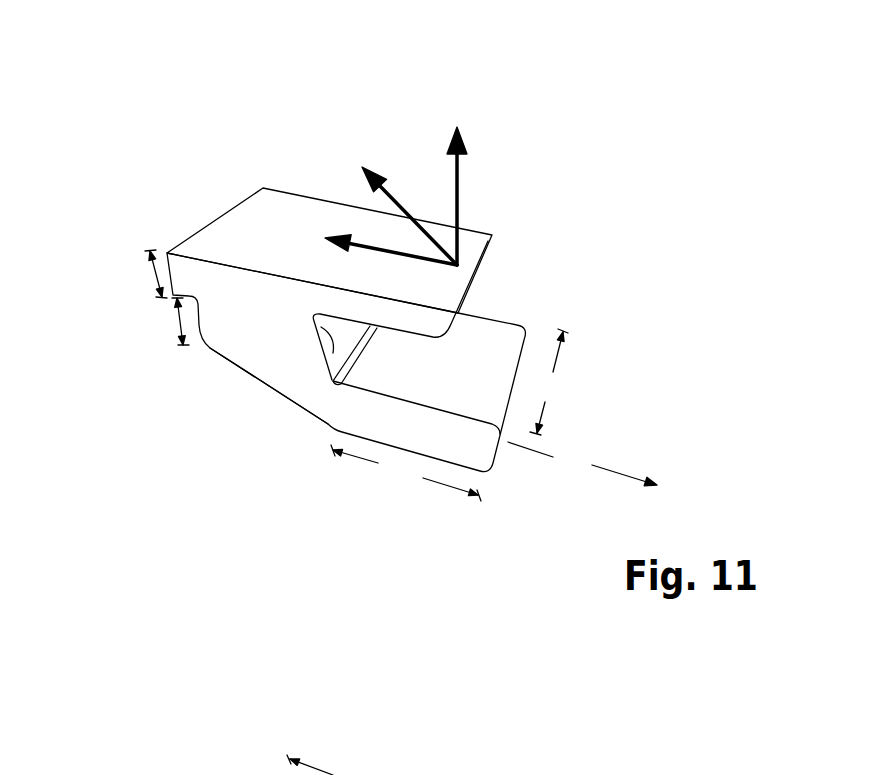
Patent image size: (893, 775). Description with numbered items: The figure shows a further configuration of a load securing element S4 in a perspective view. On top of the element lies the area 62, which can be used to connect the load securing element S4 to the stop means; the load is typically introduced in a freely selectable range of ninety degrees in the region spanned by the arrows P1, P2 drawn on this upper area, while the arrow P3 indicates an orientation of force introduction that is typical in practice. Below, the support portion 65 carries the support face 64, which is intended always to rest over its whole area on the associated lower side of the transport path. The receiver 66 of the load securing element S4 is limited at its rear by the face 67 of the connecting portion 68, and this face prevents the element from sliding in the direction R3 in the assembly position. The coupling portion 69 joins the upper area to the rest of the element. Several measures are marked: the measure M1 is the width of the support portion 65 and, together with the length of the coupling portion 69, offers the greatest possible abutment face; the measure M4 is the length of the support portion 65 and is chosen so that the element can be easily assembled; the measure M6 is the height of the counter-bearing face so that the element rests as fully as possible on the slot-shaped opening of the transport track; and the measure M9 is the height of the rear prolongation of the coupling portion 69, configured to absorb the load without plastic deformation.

The load securing element S4 is at (292, 183).
The area 62 is at (230, 242).
The support face 64 is at (487, 358).
The support portion 65 is at (472, 453).
The receiver 66 is at (378, 353).
The face 67 is at (333, 380).
The connecting portion 68 is at (297, 392).
The coupling portion 69 is at (405, 317).
The measure M9 is at (155, 285).
The measure M6 is at (178, 329).
The measure M4 is at (406, 473).
The measure M1 is at (538, 393).
The direction R3 is at (607, 468).
The arrow P1 is at (378, 250).
The arrow P2 is at (472, 196).
The arrow P3 is at (397, 203).